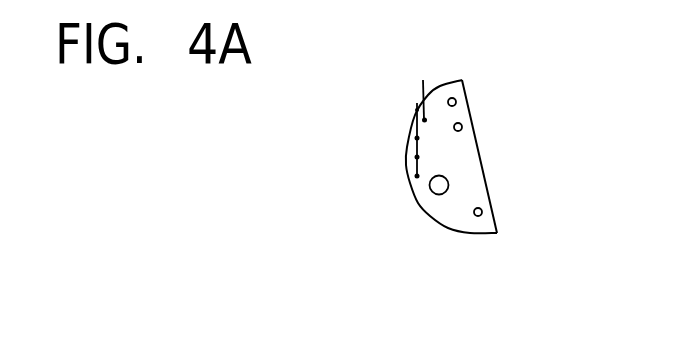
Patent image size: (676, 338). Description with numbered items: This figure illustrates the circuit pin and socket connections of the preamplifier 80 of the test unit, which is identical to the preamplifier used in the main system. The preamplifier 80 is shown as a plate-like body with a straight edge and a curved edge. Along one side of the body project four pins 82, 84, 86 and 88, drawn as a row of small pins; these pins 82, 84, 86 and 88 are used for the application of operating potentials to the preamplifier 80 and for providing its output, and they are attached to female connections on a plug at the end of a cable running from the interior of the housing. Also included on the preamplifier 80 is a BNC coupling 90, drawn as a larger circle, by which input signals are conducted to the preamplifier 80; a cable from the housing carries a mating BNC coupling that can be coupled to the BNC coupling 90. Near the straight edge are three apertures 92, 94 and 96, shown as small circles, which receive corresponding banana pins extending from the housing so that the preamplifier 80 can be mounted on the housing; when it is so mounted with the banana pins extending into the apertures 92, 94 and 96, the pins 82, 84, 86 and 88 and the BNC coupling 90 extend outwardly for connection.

The preamplifier 80 is at (400, 230).
The pin 82 is at (413, 163).
The pin 84 is at (415, 138).
The pin 86 is at (418, 112).
The pin 88 is at (422, 87).
The BNC coupling 90 is at (438, 197).
The aperture 92 is at (483, 210).
The aperture 94 is at (462, 125).
The aperture 96 is at (455, 99).